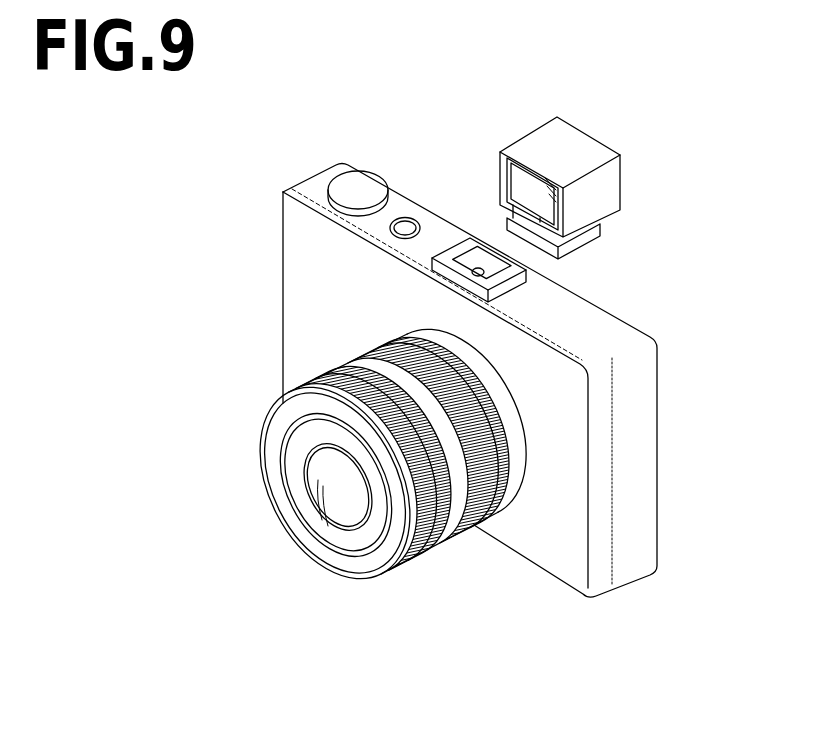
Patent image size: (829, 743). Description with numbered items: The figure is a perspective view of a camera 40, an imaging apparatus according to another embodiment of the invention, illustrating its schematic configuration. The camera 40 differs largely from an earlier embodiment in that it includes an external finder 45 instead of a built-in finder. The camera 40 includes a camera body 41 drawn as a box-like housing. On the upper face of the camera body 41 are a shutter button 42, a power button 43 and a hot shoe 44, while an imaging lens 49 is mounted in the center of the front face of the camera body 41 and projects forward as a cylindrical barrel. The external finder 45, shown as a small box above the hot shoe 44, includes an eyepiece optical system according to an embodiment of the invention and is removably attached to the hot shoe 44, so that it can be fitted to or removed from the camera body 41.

The camera 40 is at (214, 170).
The camera body 41 is at (645, 427).
The shutter button 42 is at (366, 178).
The power button 43 is at (407, 226).
The hot shoe 44 is at (453, 253).
The external finder 45 is at (576, 146).
The imaging lens 49 is at (318, 386).